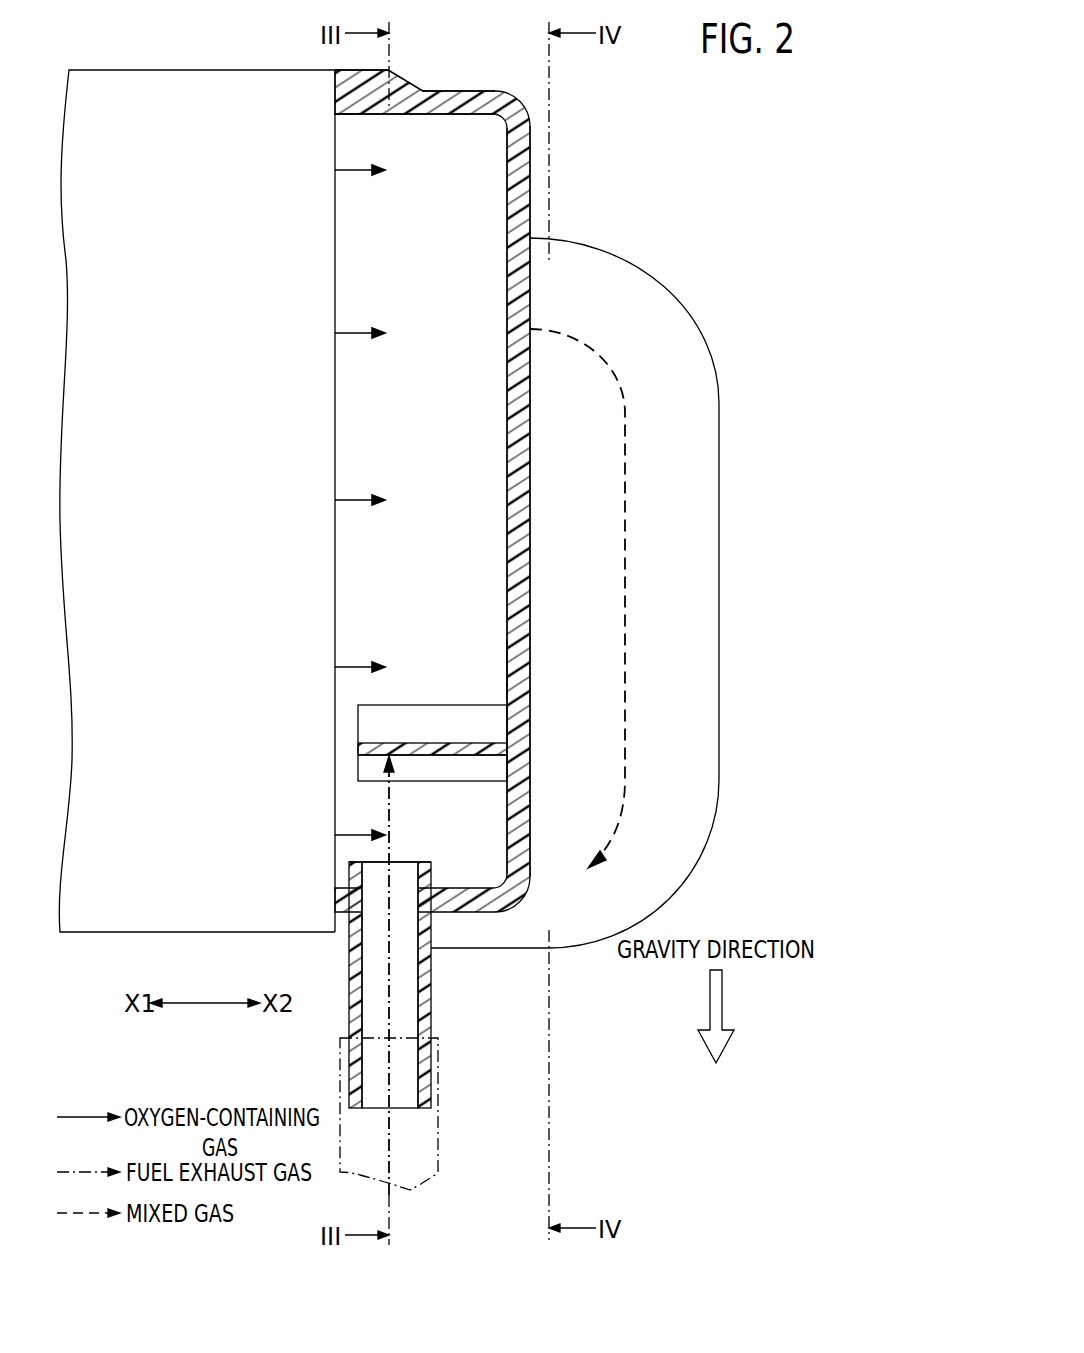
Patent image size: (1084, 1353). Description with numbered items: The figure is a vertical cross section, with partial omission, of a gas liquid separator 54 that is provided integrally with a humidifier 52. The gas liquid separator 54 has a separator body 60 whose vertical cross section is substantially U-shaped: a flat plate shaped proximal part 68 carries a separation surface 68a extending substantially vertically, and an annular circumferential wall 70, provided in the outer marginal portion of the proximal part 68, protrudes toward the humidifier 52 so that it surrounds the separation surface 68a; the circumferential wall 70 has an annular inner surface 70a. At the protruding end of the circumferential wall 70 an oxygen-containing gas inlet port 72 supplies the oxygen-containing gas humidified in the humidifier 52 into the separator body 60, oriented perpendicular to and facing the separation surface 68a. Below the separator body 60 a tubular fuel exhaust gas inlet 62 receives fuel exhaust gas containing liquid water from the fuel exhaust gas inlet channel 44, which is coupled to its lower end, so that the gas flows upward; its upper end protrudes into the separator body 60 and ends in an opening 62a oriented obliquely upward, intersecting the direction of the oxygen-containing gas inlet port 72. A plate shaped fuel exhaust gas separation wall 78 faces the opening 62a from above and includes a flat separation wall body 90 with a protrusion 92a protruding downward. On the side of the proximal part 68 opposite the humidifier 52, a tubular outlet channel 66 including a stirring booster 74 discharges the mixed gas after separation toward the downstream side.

The humidifier 52 is at (172, 76).
The oxygen-containing gas inlet port 72 is at (335, 186).
The separator body 60 is at (439, 478).
The circumferential wall 70 is at (452, 103).
The inner surface 70a is at (370, 114).
The proximal part 68 is at (536, 183).
The separation surface 68a is at (500, 654).
The fuel exhaust gas separation wall 78 is at (358, 750).
The separation wall body 90 is at (482, 757).
The protrusion 92a is at (482, 773).
The fuel exhaust gas inlet 62 is at (418, 985).
The opening 62a is at (378, 862).
The fuel exhaust gas inlet channel 44 is at (438, 1130).
The gas liquid separator 54 is at (603, 537).
The outlet channel 66 is at (625, 263).
The stirring booster 74 is at (719, 630).